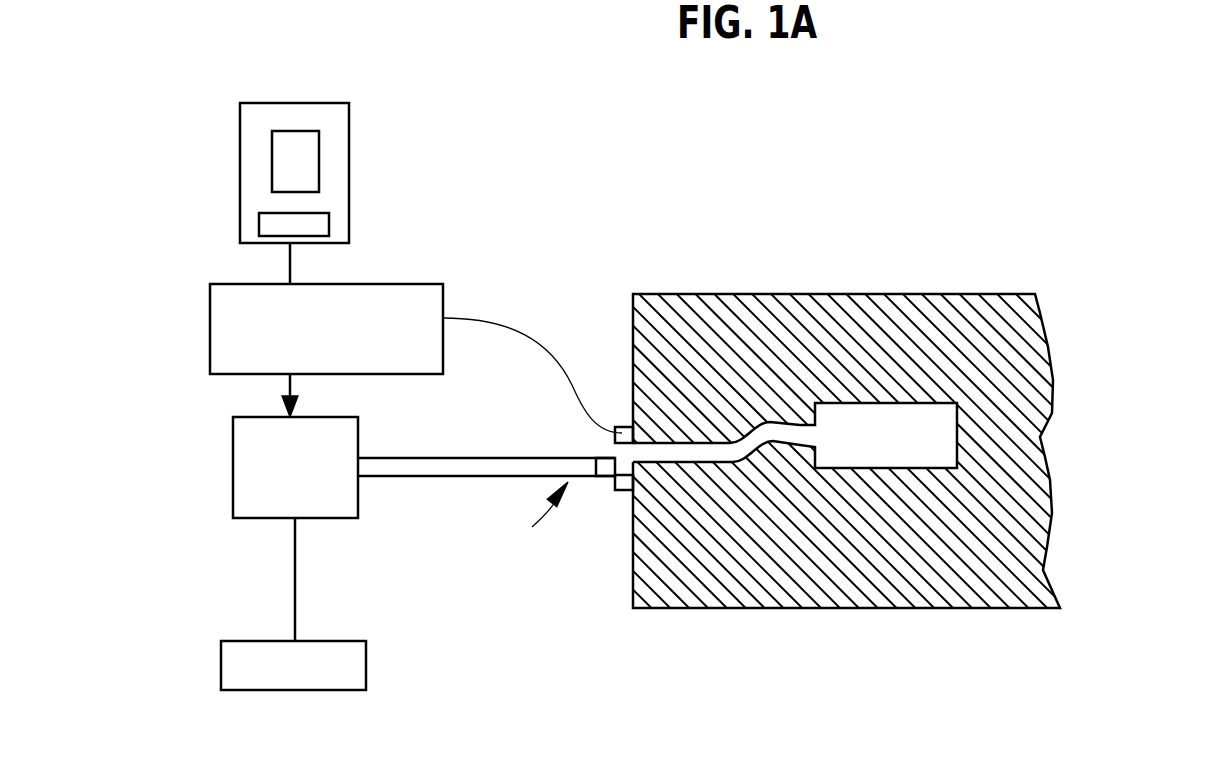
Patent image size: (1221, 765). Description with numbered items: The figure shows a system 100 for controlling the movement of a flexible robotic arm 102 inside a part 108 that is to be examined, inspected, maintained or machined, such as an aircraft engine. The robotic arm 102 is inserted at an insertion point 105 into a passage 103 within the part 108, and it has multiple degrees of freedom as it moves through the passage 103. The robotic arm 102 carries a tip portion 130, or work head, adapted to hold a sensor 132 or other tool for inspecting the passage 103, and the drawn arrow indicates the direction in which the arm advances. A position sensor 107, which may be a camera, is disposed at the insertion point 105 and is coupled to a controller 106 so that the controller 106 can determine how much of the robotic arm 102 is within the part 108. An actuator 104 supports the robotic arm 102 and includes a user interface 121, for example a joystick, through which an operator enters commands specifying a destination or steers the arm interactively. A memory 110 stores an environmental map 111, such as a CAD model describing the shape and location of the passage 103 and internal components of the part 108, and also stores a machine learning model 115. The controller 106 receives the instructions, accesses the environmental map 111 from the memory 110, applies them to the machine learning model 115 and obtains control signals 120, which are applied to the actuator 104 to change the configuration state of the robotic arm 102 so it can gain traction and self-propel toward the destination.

The system 100 is at (1158, 244).
The robotic arm 102 is at (505, 447).
The passage 103 is at (715, 457).
The actuator 104 is at (324, 519).
The insertion point 105 is at (652, 455).
The controller 106 is at (345, 284).
The position sensor 107 is at (625, 483).
The part 108 is at (906, 342).
The memory 110 is at (349, 170).
The environmental map 111 is at (307, 151).
The machine learning model 115 is at (314, 220).
The control signals 120 is at (290, 387).
The user interface 121 is at (366, 672).
The tip portion 130 is at (530, 512).
The sensor 132 is at (607, 470).